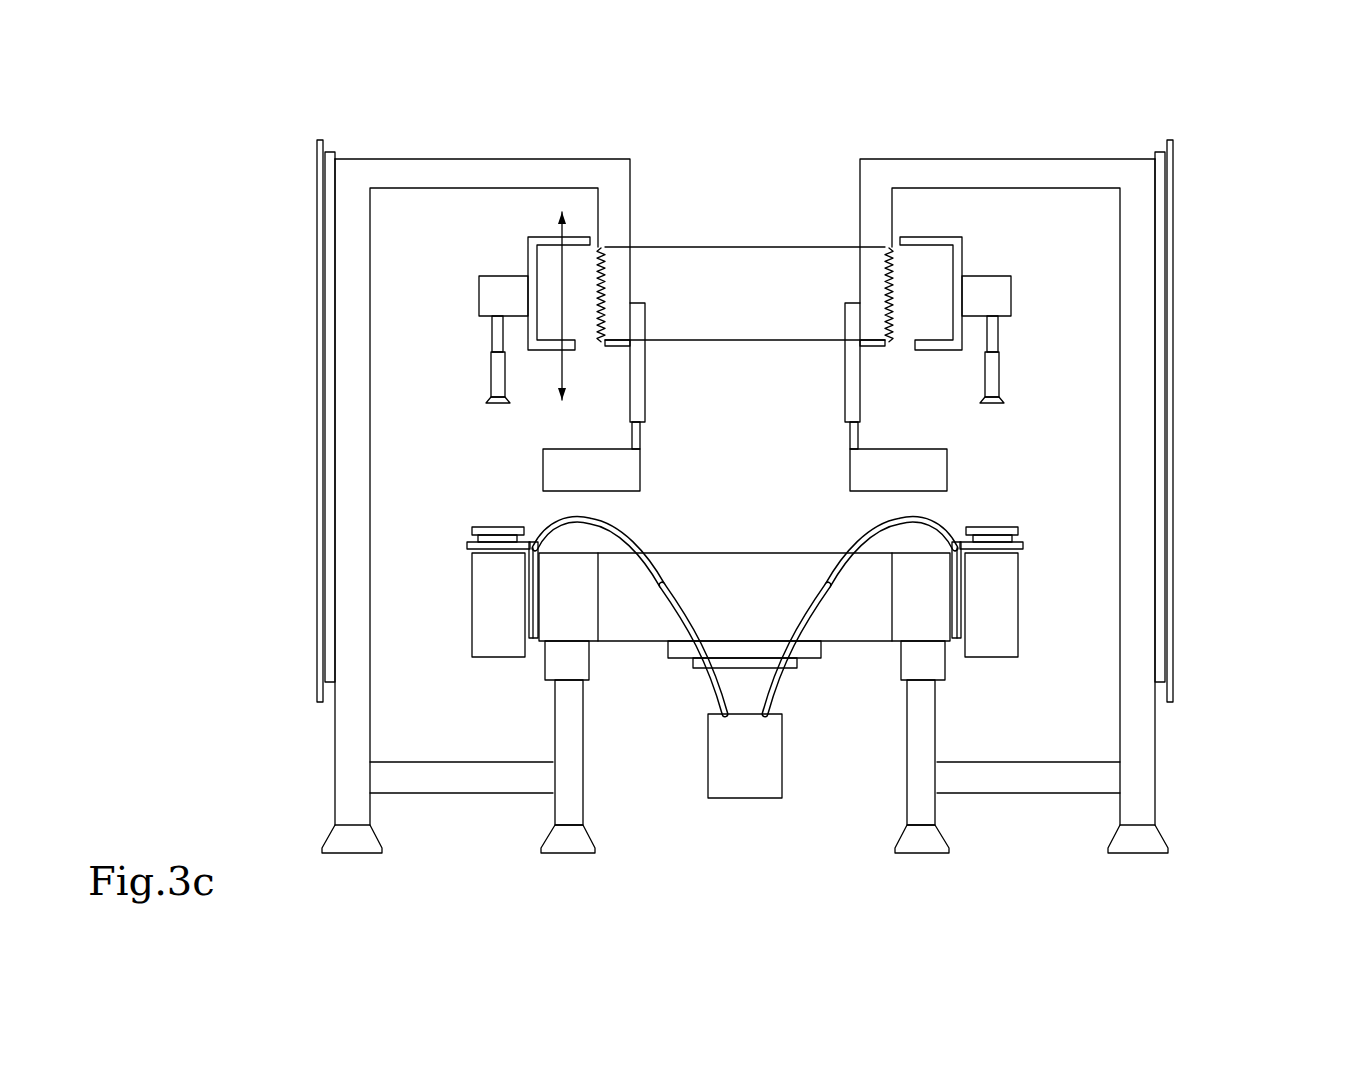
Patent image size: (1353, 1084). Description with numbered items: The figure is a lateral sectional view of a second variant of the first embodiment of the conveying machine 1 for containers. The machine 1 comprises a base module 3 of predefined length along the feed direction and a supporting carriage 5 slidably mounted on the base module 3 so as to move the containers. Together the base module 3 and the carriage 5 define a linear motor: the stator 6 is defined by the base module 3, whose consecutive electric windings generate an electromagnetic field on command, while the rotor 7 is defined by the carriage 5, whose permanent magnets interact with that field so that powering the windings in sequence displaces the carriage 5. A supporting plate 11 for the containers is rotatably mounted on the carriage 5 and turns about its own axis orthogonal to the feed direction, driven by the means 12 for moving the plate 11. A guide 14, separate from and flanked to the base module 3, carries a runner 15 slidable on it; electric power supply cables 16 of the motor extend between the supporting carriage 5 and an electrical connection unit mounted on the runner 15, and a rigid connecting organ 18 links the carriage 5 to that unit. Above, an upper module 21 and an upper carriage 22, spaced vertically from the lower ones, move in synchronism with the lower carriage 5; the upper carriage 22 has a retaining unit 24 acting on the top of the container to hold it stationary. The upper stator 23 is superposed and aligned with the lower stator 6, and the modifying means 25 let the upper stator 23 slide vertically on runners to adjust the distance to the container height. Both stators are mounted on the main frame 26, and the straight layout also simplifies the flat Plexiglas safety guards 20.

The conveying machine 1 is at (206, 270).
The base module 3 is at (598, 645).
The supporting carriage 5 is at (533, 637).
The stator 6 is at (583, 600).
The rotor 7 is at (456, 548).
The supporting plate 11 is at (488, 528).
The means for moving the plate 12 is at (462, 616).
The guide 14 is at (753, 662).
The runner 15 is at (739, 631).
The electric power supply cables 16 is at (718, 680).
The rigid connecting organ 18 is at (648, 524).
The safety guards 20 is at (317, 173).
The upper module 21 is at (608, 268).
The upper carriage 22 is at (528, 242).
The upper stator 23 is at (583, 297).
The retaining unit 24 is at (497, 378).
The modifying means 25 is at (590, 215).
The main frame 26 is at (352, 377).